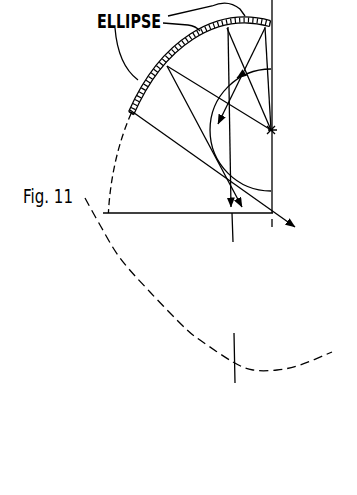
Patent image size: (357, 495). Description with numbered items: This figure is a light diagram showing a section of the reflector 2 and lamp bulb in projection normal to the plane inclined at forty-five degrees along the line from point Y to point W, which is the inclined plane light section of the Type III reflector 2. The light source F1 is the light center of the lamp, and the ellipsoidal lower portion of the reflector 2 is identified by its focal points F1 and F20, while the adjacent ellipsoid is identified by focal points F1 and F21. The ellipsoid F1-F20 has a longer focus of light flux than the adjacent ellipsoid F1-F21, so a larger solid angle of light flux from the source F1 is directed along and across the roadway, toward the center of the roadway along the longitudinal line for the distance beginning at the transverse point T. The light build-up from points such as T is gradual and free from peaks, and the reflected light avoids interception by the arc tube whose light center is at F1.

The reflector 2 is at (167, 62).
The point T is at (245, 192).
The point W is at (244, 67).
The point Y is at (204, 160).
The light source focal point F1 is at (229, 103).
The focal point F20 is at (213, 136).
The focal point F21 is at (240, 130).